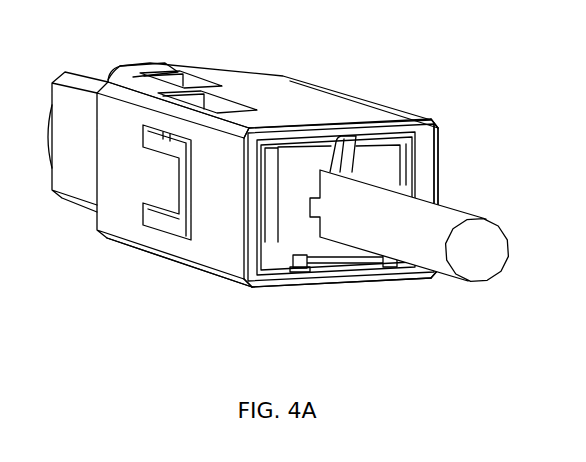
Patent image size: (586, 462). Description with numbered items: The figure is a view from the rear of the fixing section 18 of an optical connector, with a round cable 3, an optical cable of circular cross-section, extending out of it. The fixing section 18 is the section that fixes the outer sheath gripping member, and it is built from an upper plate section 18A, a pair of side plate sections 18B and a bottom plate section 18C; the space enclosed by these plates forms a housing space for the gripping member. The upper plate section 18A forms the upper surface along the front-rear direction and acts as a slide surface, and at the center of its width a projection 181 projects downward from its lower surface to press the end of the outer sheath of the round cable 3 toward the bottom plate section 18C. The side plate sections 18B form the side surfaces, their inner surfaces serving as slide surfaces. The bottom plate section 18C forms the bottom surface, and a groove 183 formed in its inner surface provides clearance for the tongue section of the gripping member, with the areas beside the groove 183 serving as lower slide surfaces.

The fixing section 18 is at (289, 191).
The upper plate section 18A is at (296, 76).
The side plate section 18B is at (440, 150).
The bottom plate section 18C is at (342, 288).
The projection 181 is at (340, 157).
The groove 183 is at (313, 275).
The round cable 3 is at (445, 217).